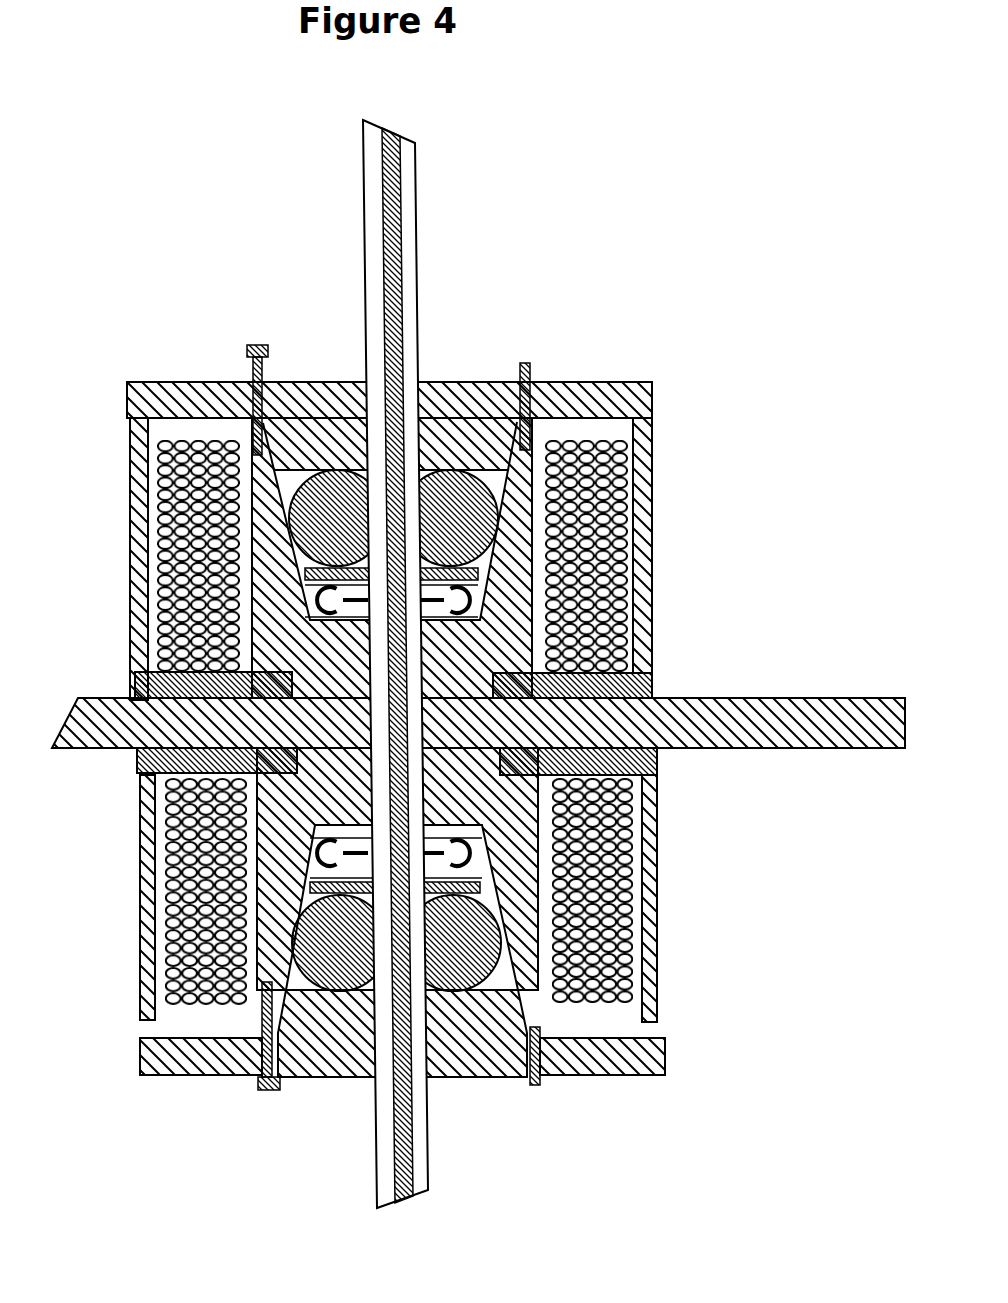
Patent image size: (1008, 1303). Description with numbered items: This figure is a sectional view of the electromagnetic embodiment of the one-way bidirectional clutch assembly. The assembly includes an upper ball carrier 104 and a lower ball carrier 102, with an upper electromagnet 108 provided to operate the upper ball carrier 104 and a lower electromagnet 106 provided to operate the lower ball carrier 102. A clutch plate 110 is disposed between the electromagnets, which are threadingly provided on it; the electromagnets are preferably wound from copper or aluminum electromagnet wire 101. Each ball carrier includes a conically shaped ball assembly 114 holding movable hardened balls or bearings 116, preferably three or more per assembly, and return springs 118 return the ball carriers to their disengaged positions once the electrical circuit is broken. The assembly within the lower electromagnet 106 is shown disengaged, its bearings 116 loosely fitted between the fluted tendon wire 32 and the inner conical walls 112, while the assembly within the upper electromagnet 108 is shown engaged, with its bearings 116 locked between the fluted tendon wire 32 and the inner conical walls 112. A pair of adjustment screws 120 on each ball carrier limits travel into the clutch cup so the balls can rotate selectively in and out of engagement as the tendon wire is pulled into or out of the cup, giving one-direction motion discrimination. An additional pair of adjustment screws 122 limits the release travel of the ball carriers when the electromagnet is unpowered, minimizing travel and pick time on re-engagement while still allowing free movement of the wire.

The fluted tendon wire 32 is at (444, 330).
The electromagnet wire 101 is at (622, 615).
The lower ball carrier 102 is at (692, 1039).
The upper ball carrier 104 is at (452, 485).
The lower electromagnet 106 is at (487, 687).
The upper electromagnet 108 is at (677, 623).
The clutch plate 110 is at (709, 676).
The inner conical walls 112 is at (552, 491).
The conically shaped ball assembly 114 is at (454, 367).
The bearings 116 is at (512, 921).
The return springs 118 is at (493, 572).
The adjustment screws 120 is at (555, 349).
The adjustment screws 122 is at (295, 329).